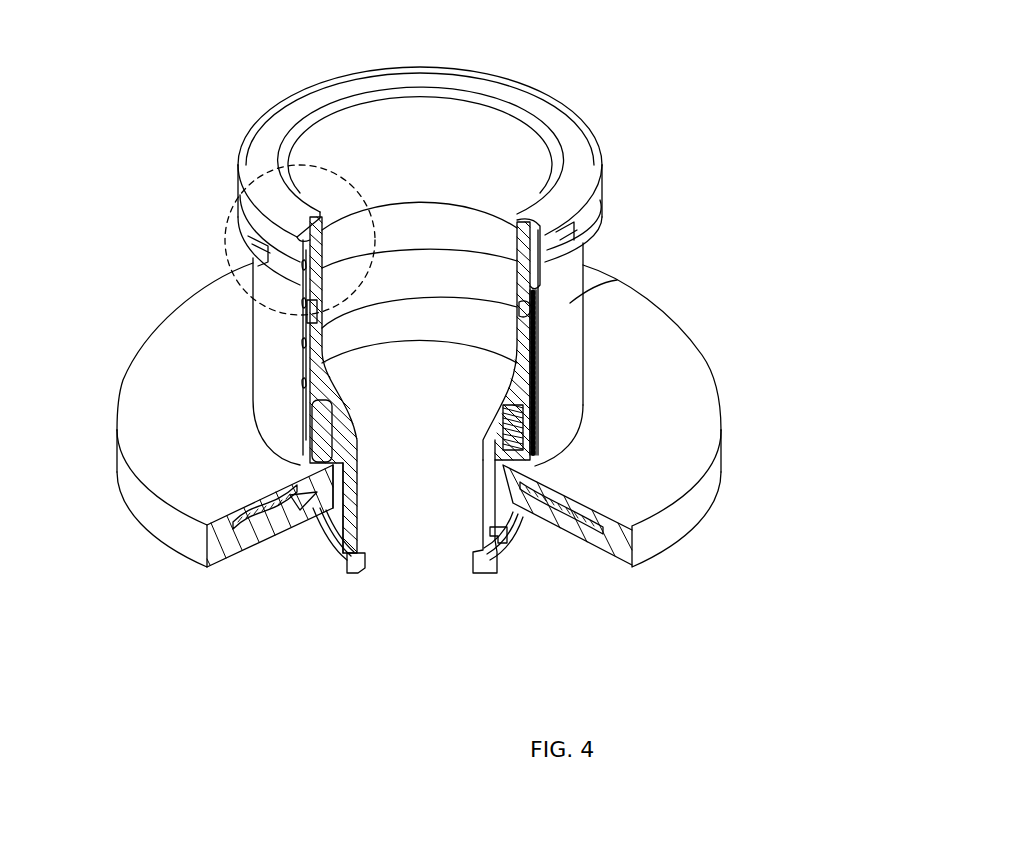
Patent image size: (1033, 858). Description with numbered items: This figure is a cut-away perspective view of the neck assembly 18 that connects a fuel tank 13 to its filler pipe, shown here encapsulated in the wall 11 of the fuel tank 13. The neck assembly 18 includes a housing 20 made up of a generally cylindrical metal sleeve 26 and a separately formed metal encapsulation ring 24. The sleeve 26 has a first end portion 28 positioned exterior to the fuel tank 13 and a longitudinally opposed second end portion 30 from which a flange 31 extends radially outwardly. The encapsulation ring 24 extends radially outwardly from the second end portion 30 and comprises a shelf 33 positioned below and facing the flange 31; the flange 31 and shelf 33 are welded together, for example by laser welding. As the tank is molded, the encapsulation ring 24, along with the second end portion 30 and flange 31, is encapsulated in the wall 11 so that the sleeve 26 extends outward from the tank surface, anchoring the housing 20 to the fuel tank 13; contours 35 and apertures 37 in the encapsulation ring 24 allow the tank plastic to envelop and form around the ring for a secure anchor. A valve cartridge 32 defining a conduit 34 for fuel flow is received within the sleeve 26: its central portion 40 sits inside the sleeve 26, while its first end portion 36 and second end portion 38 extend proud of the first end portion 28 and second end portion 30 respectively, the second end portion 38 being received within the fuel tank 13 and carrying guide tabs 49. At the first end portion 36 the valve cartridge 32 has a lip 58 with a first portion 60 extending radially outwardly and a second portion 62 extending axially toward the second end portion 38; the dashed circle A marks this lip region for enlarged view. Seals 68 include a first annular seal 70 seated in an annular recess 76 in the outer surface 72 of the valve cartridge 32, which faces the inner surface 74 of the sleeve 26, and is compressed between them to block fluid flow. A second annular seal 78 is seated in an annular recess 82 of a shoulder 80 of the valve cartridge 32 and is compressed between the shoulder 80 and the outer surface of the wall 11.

The wall 11 is at (373, 500).
The fuel tank 13 is at (166, 519).
The neck assembly 18 is at (709, 133).
The housing 20 is at (570, 328).
The encapsulation ring 24 is at (584, 520).
The sleeve 26 is at (617, 280).
The first end portion 28 is at (517, 268).
The second end portion 30 is at (546, 462).
The flange 31 is at (523, 523).
The valve cartridge 32 is at (322, 313).
The shelf 33 is at (556, 508).
The conduit 34 is at (433, 281).
The contours 35 is at (260, 508).
The first end portion 36 is at (502, 82).
The apertures 37 is at (300, 520).
The second end portion 38 is at (367, 570).
The central portion 40 is at (322, 312).
The guide tabs 49 is at (500, 535).
The lip 58 is at (586, 138).
The first portion 60 is at (513, 233).
The second portion 62 is at (580, 243).
The seals 68 is at (430, 342).
The first annular seal 70 is at (520, 307).
The outer surface 72 is at (322, 372).
The inner surface 74 is at (313, 377).
The annular recess 76 is at (520, 316).
The second annular seal 78 is at (483, 503).
The shoulder 80 is at (505, 450).
The annular recess 82 is at (470, 411).
The detail region A is at (240, 219).